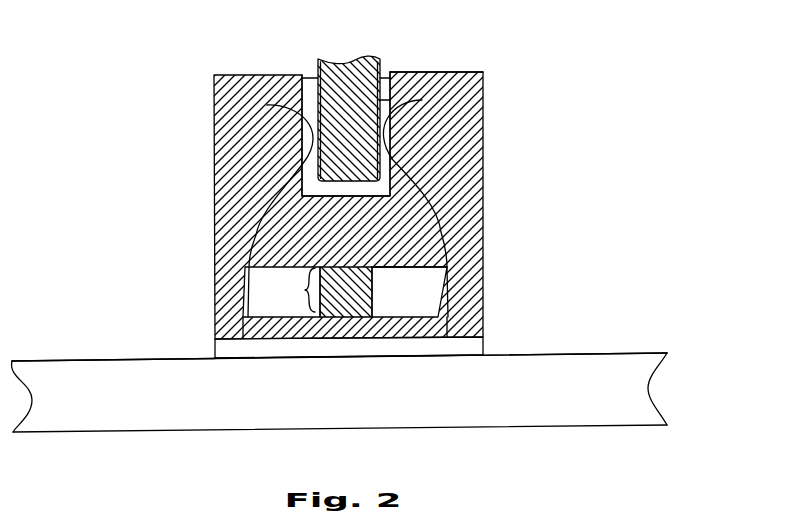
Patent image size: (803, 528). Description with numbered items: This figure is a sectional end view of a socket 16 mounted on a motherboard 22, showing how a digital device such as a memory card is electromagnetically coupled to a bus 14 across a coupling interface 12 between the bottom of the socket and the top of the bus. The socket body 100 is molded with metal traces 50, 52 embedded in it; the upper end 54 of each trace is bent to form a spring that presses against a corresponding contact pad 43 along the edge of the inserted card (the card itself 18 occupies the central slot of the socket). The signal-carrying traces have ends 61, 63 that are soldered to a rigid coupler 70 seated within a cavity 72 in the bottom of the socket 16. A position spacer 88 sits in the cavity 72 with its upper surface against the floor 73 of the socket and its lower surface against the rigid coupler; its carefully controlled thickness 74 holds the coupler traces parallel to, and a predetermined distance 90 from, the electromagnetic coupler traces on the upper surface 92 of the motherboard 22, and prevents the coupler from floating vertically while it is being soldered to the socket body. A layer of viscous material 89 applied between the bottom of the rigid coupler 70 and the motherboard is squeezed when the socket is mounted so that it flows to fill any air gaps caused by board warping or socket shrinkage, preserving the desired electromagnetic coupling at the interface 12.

The coupling interface 12 is at (388, 368).
The bus 14 is at (112, 350).
The socket 16 is at (482, 157).
The pin 18 is at (350, 60).
The motherboard 22 is at (652, 386).
The contact pads 43 is at (425, 77).
The metal trace 50 is at (268, 196).
The metal trace 52 is at (445, 208).
The upper end of metal trace 54 is at (382, 127).
The end of metal trace 61 is at (245, 278).
The end of metal trace 63 is at (443, 303).
The rigid coupler 70 is at (329, 341).
The cavity 72 is at (445, 264).
The floor of the socket 73 is at (388, 278).
The thickness of spacer 74 is at (296, 290).
The position spacer 88 is at (350, 266).
The viscous material 89 is at (250, 352).
The predetermined distance 90 is at (498, 346).
The upper surface of the motherboard 92 is at (577, 344).
The socket body 100 is at (483, 89).